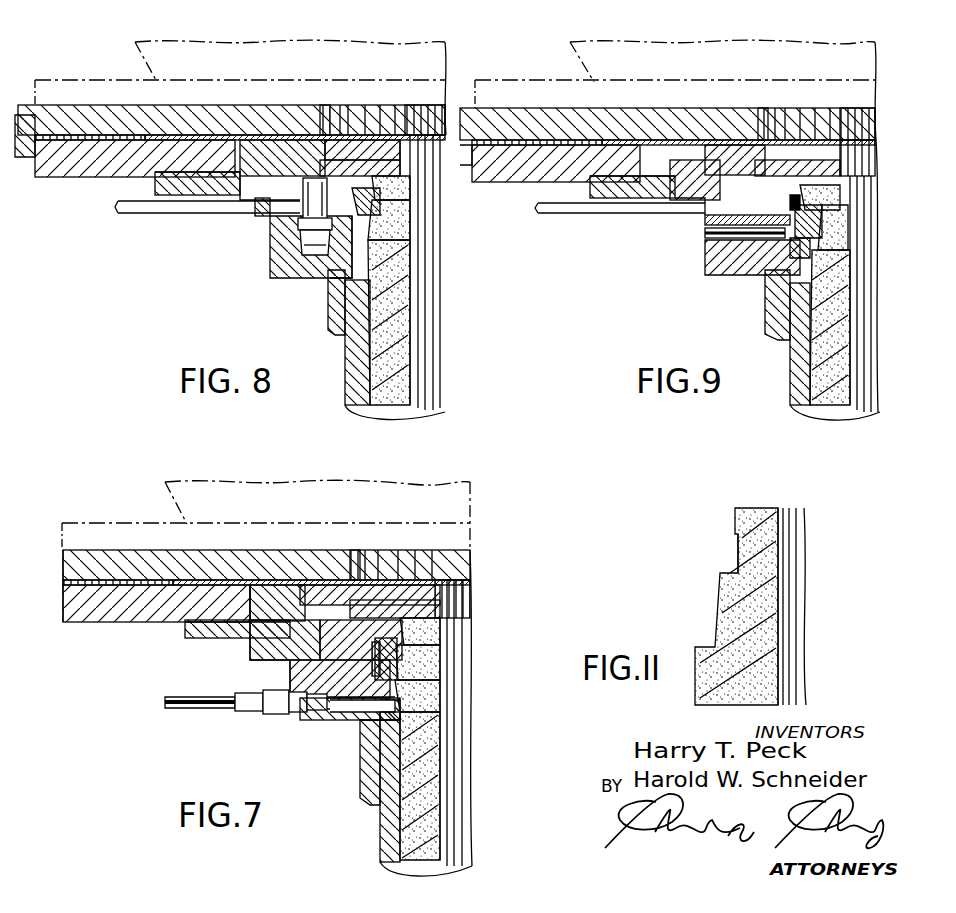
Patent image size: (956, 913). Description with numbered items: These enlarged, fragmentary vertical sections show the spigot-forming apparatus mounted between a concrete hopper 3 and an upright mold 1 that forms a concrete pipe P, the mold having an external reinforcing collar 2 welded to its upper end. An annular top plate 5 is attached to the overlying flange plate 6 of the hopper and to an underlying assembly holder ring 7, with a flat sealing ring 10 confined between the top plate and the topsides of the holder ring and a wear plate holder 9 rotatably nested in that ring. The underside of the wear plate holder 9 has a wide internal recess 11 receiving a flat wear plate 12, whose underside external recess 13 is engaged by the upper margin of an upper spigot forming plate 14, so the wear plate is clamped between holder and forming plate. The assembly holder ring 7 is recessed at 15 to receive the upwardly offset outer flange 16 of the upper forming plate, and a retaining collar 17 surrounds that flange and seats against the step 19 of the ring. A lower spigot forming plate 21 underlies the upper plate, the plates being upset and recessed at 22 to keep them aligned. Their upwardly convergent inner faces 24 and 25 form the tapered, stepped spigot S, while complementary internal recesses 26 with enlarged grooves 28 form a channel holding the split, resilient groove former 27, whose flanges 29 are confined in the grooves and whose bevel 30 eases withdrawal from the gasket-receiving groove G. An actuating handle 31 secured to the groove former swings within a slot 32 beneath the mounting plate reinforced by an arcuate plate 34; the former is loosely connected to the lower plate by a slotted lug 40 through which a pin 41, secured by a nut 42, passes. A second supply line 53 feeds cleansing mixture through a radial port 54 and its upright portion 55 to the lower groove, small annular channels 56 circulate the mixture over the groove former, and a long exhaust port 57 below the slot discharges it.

In FIG. 8, the mold 1 is at (346, 368).
In FIG. 9, the mold 1 is at (790, 360).
In FIG. 7, the mold 1 is at (380, 810).
In FIG. 8, the external reinforcing collar 2 is at (330, 320).
In FIG. 9, the external reinforcing collar 2 is at (766, 330).
In FIG. 7, the external reinforcing collar 2 is at (360, 774).
In FIG. 8, the hopper 3 is at (190, 42).
In FIG. 9, the hopper 3 is at (748, 42).
In FIG. 7, the hopper 3 is at (478, 494).
In FIG. 8, the top plate 5 is at (86, 112).
In FIG. 9, the top plate 5 is at (500, 115).
In FIG. 7, the top plate 5 is at (110, 560).
In FIG. 8, the flange plate 6 is at (76, 76).
In FIG. 7, the flange plate 6 is at (84, 520).
In FIG. 8, the assembly holder ring 7 is at (70, 178).
In FIG. 9, the assembly holder ring 7 is at (502, 184).
In FIG. 7, the assembly holder ring 7 is at (96, 622).
In FIG. 8, the wear plate holder 9 is at (396, 140).
In FIG. 9, the wear plate holder 9 is at (722, 156).
In FIG. 7, the wear plate holder 9 is at (304, 598).
In FIG. 8, the sealing ring 10 is at (300, 172).
In FIG. 9, the sealing ring 10 is at (596, 148).
In FIG. 7, the sealing ring 10 is at (194, 580).
In FIG. 8, the internal annular recess 11 is at (366, 155).
In FIG. 9, the internal annular recess 11 is at (832, 168).
In FIG. 7, the internal annular recess 11 is at (380, 600).
In FIG. 8, the wear plate 12 is at (422, 145).
In FIG. 9, the wear plate 12 is at (848, 170).
In FIG. 7, the wear plate 12 is at (442, 602).
In FIG. 8, the external recess 13 is at (405, 188).
In FIG. 9, the external recess 13 is at (810, 195).
In FIG. 7, the external recess 13 is at (408, 630).
In FIG. 8, the upper spigot forming plate 14 is at (266, 160).
In FIG. 7, the upper spigot forming plate 14 is at (298, 655).
In FIG. 8, the internal recess of assembly holder ring 15 is at (238, 175).
In FIG. 9, the internal recess of assembly holder ring 15 is at (690, 178).
In FIG. 7, the internal recess of assembly holder ring 15 is at (258, 610).
In FIG. 8, the outer peripheral flange 16 is at (224, 206).
In FIG. 9, the outer peripheral flange 16 is at (660, 202).
In FIG. 7, the outer peripheral flange 16 is at (276, 620).
In FIG. 8, the retaining collar 17 is at (155, 183).
In FIG. 9, the retaining collar 17 is at (590, 188).
In FIG. 7, the retaining collar 17 is at (208, 638).
In FIG. 8, the step 19 is at (176, 172).
In FIG. 9, the step 19 is at (614, 176).
In FIG. 7, the step 19 is at (188, 630).
In FIG. 8, the lower spigot forming plate 21 is at (278, 272).
In FIG. 9, the lower spigot forming plate 21 is at (716, 276).
In FIG. 7, the lower spigot forming plate 21 is at (306, 722).
In FIG. 7, the upset and recess 22 is at (298, 672).
In FIG. 9, the inner face of upper forming plate 24 is at (800, 200).
In FIG. 7, the inner face of upper forming plate 24 is at (404, 640).
In FIG. 8, the inner face of lower forming plate 25 is at (392, 247).
In FIG. 9, the inner face of lower forming plate 25 is at (850, 268).
In FIG. 8, the internal recesses 26 is at (382, 225).
In FIG. 9, the internal recesses 26 is at (824, 218).
In FIG. 7, the internal recesses 26 is at (408, 688).
In FIG. 8, the groove former 27 is at (392, 206).
In FIG. 9, the groove former 27 is at (832, 228).
In FIG. 7, the groove former 27 is at (412, 664).
In FIG. 8, the annular grooves 28 is at (330, 276).
In FIG. 9, the annular grooves 28 is at (770, 162).
In FIG. 7, the annular grooves 28 is at (360, 726).
In FIG. 8, the annular flanges 29 is at (332, 175).
In FIG. 9, the annular flanges 29 is at (800, 172).
In FIG. 7, the annular flanges 29 is at (360, 610).
In FIG. 7, the bevel 30 is at (400, 650).
In FIG. 8, the actuating handle 31 is at (126, 214).
In FIG. 9, the actuating handle 31 is at (594, 214).
In FIG. 8, the slot 32 is at (258, 210).
In FIG. 9, the slot 32 is at (705, 222).
In FIG. 8, the arcuate plate 34 is at (24, 158).
In FIG. 8, the slotted lug 40 is at (298, 222).
In FIG. 8, the pin 41 is at (295, 262).
In FIG. 8, the nut 42 is at (308, 178).
In FIG. 7, the second supply line 53 is at (184, 686).
In FIG. 7, the radial port 54 is at (340, 720).
In FIG. 7, the upright portion of port 55 is at (478, 720).
In FIG. 9, the annular channels 56 is at (805, 252).
In FIG. 7, the annular channels 56 is at (404, 706).
In FIG. 9, the exhaust port 57 is at (704, 240).
In FIG. 8, the pipe P is at (442, 412).
In FIG. 9, the pipe P is at (812, 410).
In FIG. 7, the pipe P is at (476, 840).
In FIG. 11, the pipe P is at (806, 692).
In FIG. 11, the spigot S is at (718, 612).
In FIG. 11, the gasket-receiving groove G is at (736, 553).